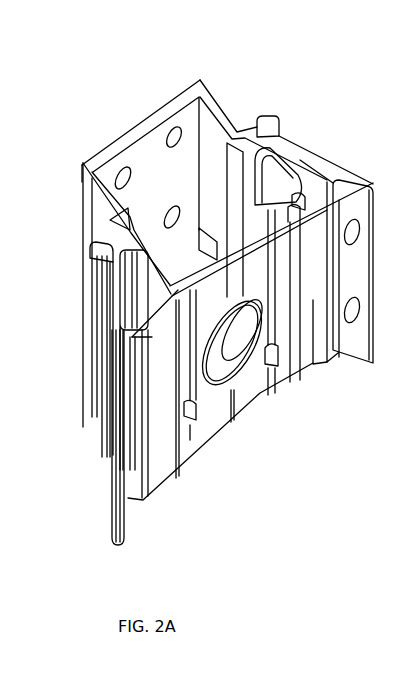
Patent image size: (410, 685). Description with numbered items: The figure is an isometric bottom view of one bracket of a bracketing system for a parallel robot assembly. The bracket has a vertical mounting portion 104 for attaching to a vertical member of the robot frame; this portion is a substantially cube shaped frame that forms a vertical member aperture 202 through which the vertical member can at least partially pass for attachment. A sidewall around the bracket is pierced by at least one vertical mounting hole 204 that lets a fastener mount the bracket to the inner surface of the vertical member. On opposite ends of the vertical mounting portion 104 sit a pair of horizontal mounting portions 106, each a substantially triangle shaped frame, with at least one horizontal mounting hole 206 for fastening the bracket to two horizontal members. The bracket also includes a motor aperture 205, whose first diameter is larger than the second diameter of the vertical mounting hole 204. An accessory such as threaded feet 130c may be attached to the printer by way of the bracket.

The vertical mounting portion 104 is at (222, 120).
The vertical member aperture 202 is at (170, 185).
The vertical mounting hole 204 is at (170, 140).
The horizontal mounting portion 106 is at (297, 157).
The horizontal mounting hole 206 is at (352, 232).
The motor aperture 205 is at (236, 355).
The threaded feet 130c is at (110, 457).